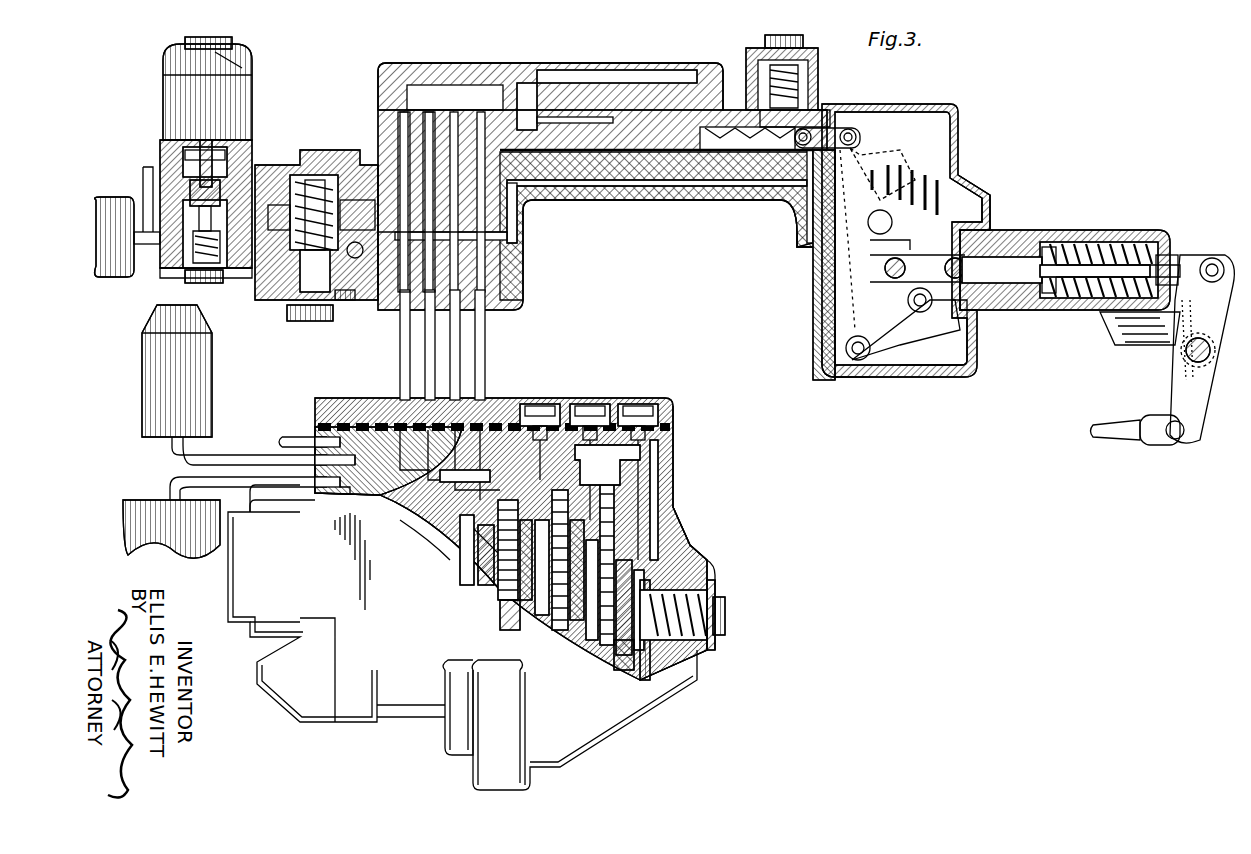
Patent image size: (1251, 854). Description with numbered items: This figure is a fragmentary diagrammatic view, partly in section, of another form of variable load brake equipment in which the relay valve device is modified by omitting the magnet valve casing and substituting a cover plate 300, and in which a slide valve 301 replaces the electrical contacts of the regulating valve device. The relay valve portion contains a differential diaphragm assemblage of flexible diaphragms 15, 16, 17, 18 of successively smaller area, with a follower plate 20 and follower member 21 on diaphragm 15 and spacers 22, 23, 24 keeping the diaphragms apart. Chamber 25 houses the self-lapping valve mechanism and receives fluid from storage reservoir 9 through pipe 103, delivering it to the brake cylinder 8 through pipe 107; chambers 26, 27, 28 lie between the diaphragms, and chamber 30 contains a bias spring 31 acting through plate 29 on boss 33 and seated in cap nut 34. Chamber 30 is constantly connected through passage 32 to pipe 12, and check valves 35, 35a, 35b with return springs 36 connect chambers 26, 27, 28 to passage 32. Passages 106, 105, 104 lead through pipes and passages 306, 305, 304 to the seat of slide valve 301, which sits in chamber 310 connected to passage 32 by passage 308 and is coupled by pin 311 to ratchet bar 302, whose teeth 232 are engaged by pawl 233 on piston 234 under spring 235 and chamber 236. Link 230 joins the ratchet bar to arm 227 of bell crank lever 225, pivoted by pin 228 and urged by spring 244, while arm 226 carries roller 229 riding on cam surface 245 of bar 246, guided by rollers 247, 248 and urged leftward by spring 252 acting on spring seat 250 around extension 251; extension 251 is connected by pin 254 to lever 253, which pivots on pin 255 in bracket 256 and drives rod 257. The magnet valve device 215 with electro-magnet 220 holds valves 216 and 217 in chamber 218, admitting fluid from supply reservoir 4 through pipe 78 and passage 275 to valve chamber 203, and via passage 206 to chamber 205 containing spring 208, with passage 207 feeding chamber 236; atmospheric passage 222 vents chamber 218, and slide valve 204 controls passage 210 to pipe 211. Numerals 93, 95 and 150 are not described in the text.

The supply reservoir 4 is at (118, 277).
The brake cylinder 8 is at (155, 375).
The storage reservoir 9 is at (128, 523).
The pipe 12 is at (287, 437).
The diaphragm 15 is at (500, 580).
The diaphragm 16 is at (560, 615).
The diaphragm 17 is at (610, 625).
The diaphragm 18 is at (625, 670).
The follower plate 20 is at (462, 550).
The follower member 21 is at (524, 585).
The spacer 22 is at (538, 605).
The spacer 23 is at (590, 628).
The spacer 24 is at (636, 662).
The chamber 25 is at (485, 560).
The chamber 26 is at (505, 615).
The chamber 27 is at (572, 620).
The chamber 28 is at (618, 650).
The plate 29 is at (690, 580).
The chamber 30 is at (672, 563).
The bias spring 31 is at (715, 592).
The passage 32 is at (660, 487).
The boss 33 is at (652, 668).
The cap nut 34 is at (725, 612).
The check valve 35 is at (585, 410).
The check valve 35a is at (607, 465).
The check valve 35b is at (660, 410).
The return spring 36 is at (548, 405).
The pipe 78 is at (152, 244).
The knob 93 is at (166, 88).
The knob shell 95 is at (254, 90).
The pipe 103 is at (170, 480).
The passage 104 is at (420, 535).
The passage 105 is at (440, 505).
The passage 106 is at (468, 525).
The pipe 107 is at (228, 455).
The bracket 150 is at (298, 724).
The valve chamber 203 is at (258, 296).
The slide valve 204 is at (290, 315).
The chamber 205 is at (322, 178).
The passage 206 is at (270, 165).
The passage 207 is at (342, 182).
The spring 208 is at (312, 170).
The passage 210 is at (395, 290).
The pipe 211 is at (392, 330).
The magnet valve device 215 is at (205, 44).
The valve 216 is at (250, 152).
The valve 217 is at (170, 198).
The chamber 218 is at (182, 168).
The electro-magnet 220 is at (165, 100).
The atmospheric passage 222 is at (176, 148).
The bell crank lever 225 is at (838, 377).
The arm 226 is at (920, 340).
The arm 227 is at (865, 165).
The pin 228 is at (865, 360).
The roller 229 is at (977, 352).
The link 230 is at (870, 113).
The teeth 232 is at (760, 150).
The pawl 233 is at (820, 117).
The piston 234 is at (800, 48).
The spring 235 is at (808, 86).
The piston chamber 236 is at (746, 50).
The spring 244 is at (985, 185).
The cam surface 245 is at (918, 312).
The bar 246 is at (1010, 285).
The roller 247 is at (900, 260).
The roller 248 is at (995, 232).
The spring seat 250 is at (1055, 240).
The extension 251 is at (1100, 240).
The spring 252 is at (1150, 248).
The lever 253 is at (1232, 290).
The pin 254 is at (1200, 258).
The pin 255 is at (1183, 354).
The bracket 256 is at (1125, 318).
The rod 257 is at (1113, 425).
The passage 275 is at (252, 282).
The cover plate 300 is at (342, 400).
The slide valve 301 is at (440, 100).
The ratchet bar 302 is at (575, 150).
The pipe and passage 304 is at (405, 385).
The pipe and passage 305 is at (440, 370).
The pipe and passage 306 is at (480, 335).
The passage 308 is at (423, 392).
The chamber 310 is at (520, 83).
The pin 311 is at (555, 66).